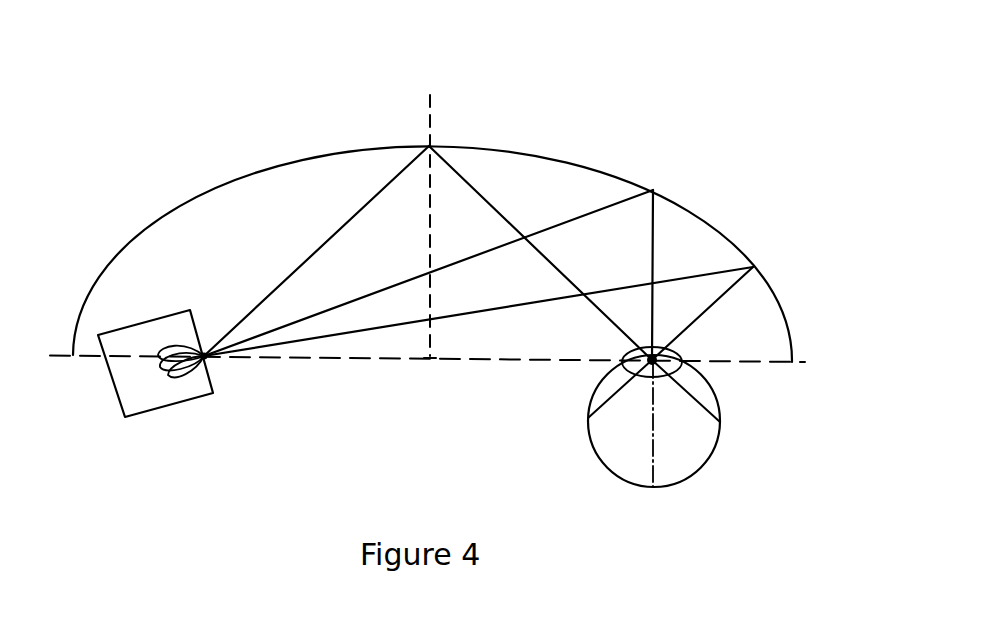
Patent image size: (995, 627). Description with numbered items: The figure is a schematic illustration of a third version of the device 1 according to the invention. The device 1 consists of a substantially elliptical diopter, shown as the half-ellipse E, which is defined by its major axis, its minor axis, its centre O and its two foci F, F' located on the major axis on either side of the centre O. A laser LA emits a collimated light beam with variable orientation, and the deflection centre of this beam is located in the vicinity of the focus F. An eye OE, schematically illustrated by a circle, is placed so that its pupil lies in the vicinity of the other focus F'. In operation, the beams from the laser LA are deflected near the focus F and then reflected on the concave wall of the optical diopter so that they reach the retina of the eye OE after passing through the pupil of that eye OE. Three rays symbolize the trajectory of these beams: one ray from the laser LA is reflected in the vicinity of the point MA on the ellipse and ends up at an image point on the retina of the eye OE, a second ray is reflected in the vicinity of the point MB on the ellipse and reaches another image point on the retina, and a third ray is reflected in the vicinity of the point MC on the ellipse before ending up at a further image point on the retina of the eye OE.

The device 1 is at (572, 108).
The half-ellipse E is at (270, 164).
The centre O is at (428, 375).
The point M_C on the ellipse MC is at (428, 239).
The point M_B on the ellipse MB is at (449, 263).
The point M_A on the ellipse MA is at (497, 304).
The focus F is at (194, 365).
The laser LA is at (203, 393).
The focus F' is at (664, 356).
The eye OE is at (708, 463).